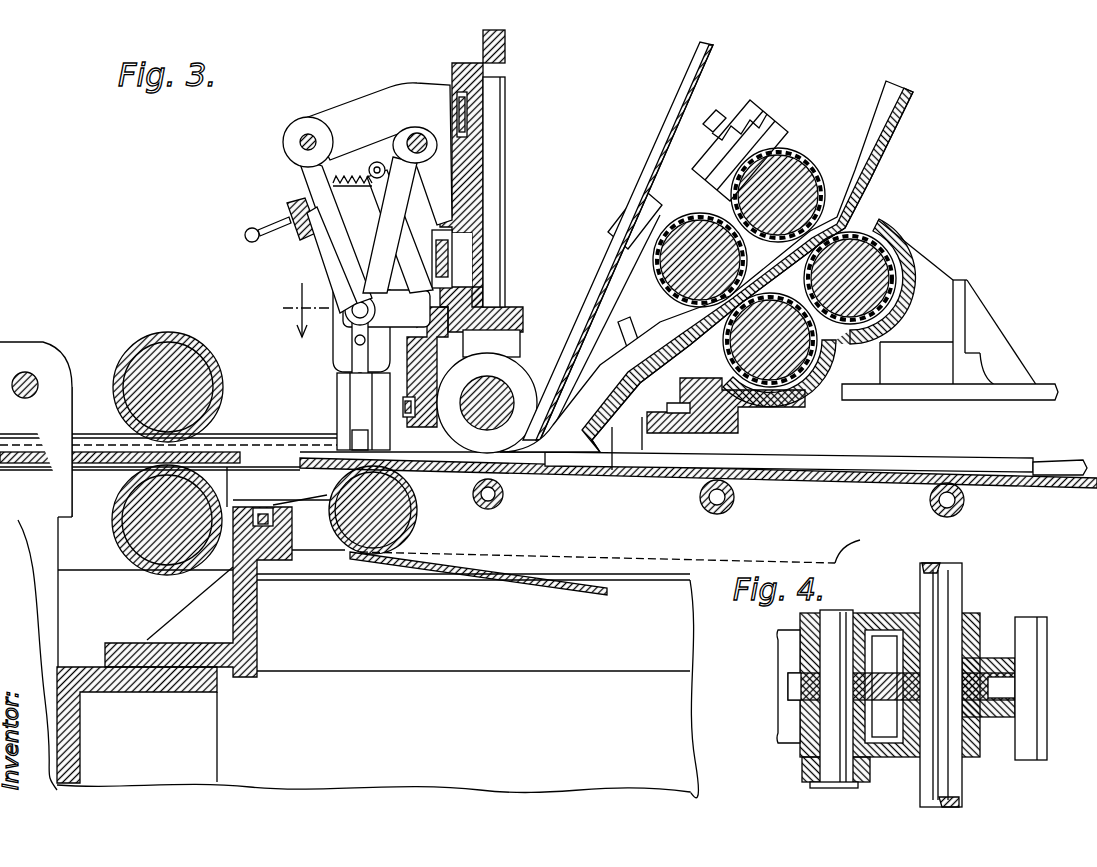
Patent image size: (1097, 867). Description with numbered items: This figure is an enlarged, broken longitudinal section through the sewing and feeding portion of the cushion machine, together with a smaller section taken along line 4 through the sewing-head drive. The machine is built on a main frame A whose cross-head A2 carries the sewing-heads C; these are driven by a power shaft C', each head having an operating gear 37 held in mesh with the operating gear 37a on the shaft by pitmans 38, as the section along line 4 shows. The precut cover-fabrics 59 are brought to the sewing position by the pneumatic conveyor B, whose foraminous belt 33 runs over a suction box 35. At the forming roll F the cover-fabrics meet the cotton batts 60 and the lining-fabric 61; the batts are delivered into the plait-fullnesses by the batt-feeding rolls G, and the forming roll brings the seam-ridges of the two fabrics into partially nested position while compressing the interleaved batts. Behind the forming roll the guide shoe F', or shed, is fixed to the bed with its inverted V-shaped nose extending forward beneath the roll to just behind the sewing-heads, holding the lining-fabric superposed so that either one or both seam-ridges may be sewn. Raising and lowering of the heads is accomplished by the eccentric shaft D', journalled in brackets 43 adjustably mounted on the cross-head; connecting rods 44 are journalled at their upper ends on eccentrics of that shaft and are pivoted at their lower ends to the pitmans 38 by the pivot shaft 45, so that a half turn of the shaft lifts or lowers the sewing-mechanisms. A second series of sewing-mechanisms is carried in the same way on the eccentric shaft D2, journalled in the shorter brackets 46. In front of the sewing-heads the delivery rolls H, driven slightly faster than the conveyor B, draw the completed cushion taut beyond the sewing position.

In FIG. 3, the section line 4 is at (306, 310).
In FIG. 3, the foraminous belt 33 is at (573, 584).
In FIG. 3, the suction box 35 is at (840, 498).
In FIG. 4, the operating gear 37 is at (790, 687).
In FIG. 3, the operating gear 37a is at (487, 391).
In FIG. 4, the operating gear 37a is at (992, 660).
In FIG. 3, the pitman 38 is at (355, 300).
In FIG. 4, the pitman 38 is at (890, 622).
In FIG. 3, the bracket 43 is at (352, 105).
In FIG. 3, the connecting rod 44 is at (320, 183).
In FIG. 4, the connecting rod 44 is at (802, 768).
In FIG. 3, the pivot shaft 45 is at (333, 297).
In FIG. 4, the pivot shaft 45 is at (842, 614).
In FIG. 3, the journalled bracket 46 is at (428, 160).
In FIG. 3, the precut cover-fabric 59 is at (970, 468).
In FIG. 3, the cotton batt 60 is at (905, 140).
In FIG. 3, the lining-fabric 61 is at (655, 155).
In FIG. 3, the main frame A is at (217, 682).
In FIG. 3, the cross-head A2 is at (493, 178).
In FIG. 3, the pneumatic conveyor B is at (507, 577).
In FIG. 3, the sewing-head C is at (356, 370).
In FIG. 3, the power shaft C' is at (465, 293).
In FIG. 4, the power shaft C' is at (965, 685).
In FIG. 3, the eccentric shaft D' is at (285, 142).
In FIG. 3, the eccentric shaft D2 is at (413, 132).
In FIG. 3, the forming roll F is at (476, 228).
In FIG. 3, the guide shoe F' is at (624, 462).
In FIG. 3, the batt-feeding roll G is at (835, 220).
In FIG. 3, the delivery roll H is at (118, 468).